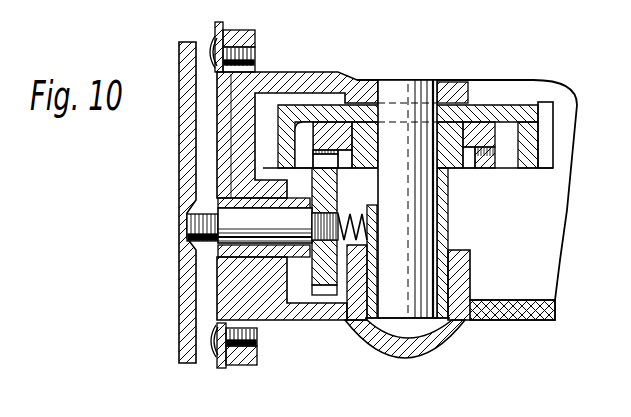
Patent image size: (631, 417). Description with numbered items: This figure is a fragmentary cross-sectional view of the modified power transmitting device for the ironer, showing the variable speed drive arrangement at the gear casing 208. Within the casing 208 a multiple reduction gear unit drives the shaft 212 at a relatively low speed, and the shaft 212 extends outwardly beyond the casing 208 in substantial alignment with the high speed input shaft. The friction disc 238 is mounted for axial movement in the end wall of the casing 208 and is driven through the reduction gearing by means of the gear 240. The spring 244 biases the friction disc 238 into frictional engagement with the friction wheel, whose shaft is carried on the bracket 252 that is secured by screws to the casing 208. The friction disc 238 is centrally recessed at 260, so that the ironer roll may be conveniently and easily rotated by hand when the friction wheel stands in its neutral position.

The gear casing 208 is at (523, 320).
The shaft 212 is at (427, 242).
The friction disc 238 is at (187, 322).
The gear 240 is at (322, 290).
The spring 244 is at (362, 218).
The bracket 252 is at (219, 366).
The central recess 260 is at (188, 215).